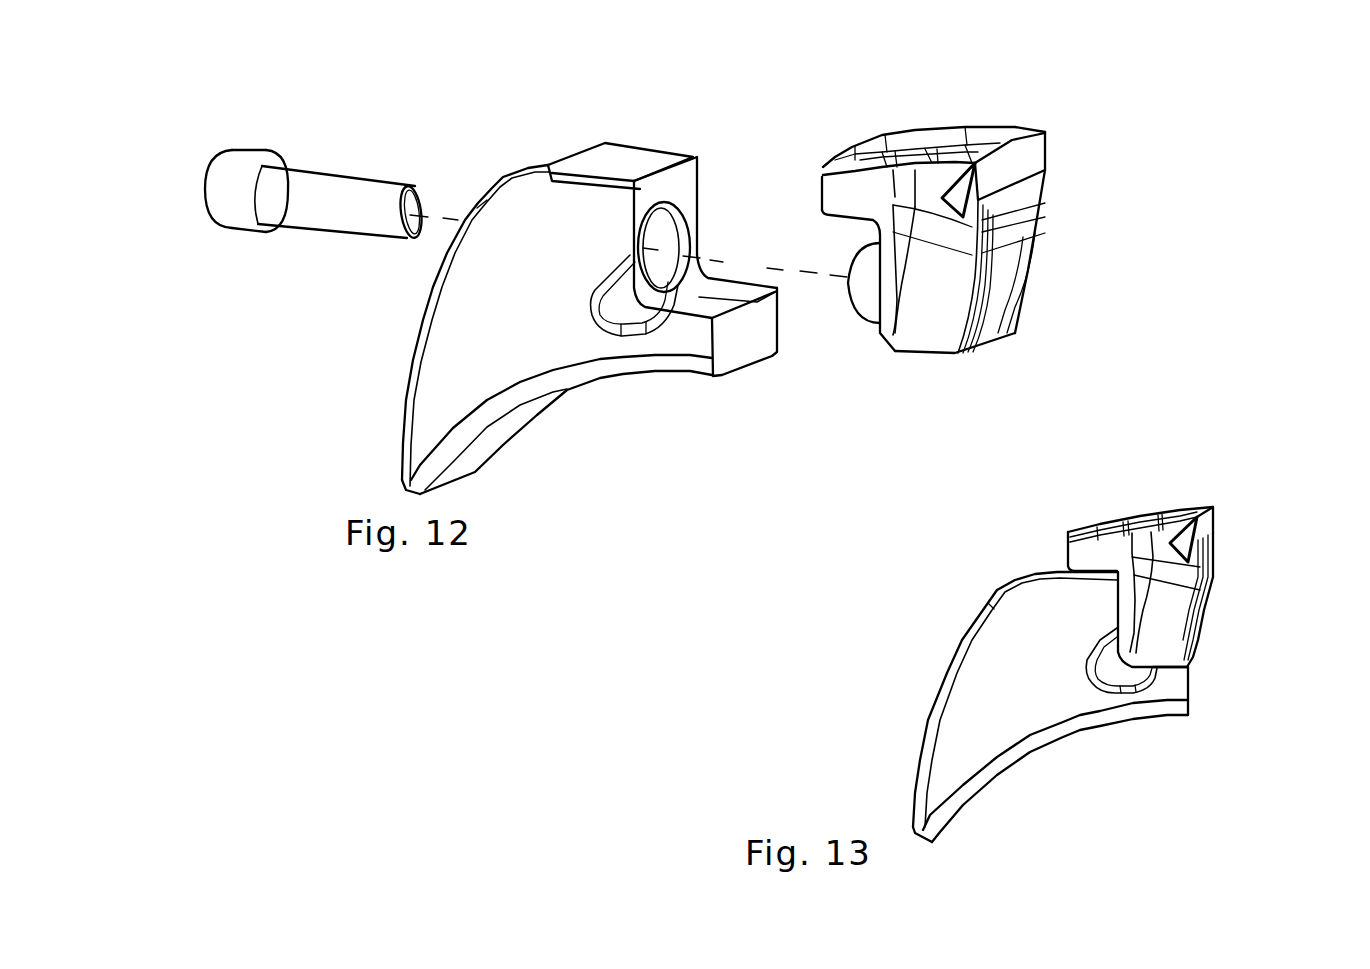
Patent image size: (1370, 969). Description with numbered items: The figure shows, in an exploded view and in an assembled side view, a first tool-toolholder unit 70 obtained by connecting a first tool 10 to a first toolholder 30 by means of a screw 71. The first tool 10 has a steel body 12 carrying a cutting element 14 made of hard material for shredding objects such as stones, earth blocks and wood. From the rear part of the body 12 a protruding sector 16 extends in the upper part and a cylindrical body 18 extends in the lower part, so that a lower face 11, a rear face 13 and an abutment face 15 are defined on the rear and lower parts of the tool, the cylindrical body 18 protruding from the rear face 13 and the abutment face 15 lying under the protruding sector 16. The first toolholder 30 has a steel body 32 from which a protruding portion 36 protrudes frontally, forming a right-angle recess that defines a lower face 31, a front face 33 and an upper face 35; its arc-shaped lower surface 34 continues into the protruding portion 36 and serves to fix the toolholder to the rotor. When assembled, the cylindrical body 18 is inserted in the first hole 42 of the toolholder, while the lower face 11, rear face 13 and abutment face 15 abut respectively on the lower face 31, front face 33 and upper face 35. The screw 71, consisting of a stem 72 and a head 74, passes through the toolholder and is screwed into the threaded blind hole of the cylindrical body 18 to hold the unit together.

In FIG. 12, the first tool 10 is at (953, 264).
In FIG. 13, the first tool 10 is at (1178, 526).
In FIG. 12, the lower face 11 is at (927, 350).
In FIG. 12, the body 12 is at (932, 283).
In FIG. 13, the body 12 is at (1163, 617).
In FIG. 12, the rear face 13 is at (870, 318).
In FIG. 13, the cutting element 14 is at (1220, 507).
In FIG. 12, the abutment face 15 is at (847, 217).
In FIG. 12, the protruding sector 16 is at (853, 193).
In FIG. 13, the protruding sector 16 is at (1100, 552).
In FIG. 12, the cylindrical body 18 is at (866, 285).
In FIG. 12, the first toolholder 30 is at (591, 290).
In FIG. 13, the first toolholder 30 is at (1011, 703).
In FIG. 12, the lower face 31 is at (730, 287).
In FIG. 12, the body 32 is at (467, 367).
In FIG. 13, the body 32 is at (987, 715).
In FIG. 12, the front face 33 is at (667, 285).
In FIG. 13, the lower surface 34 is at (1037, 751).
In FIG. 12, the upper face 35 is at (622, 158).
In FIG. 12, the protruding portion 36 is at (739, 304).
In FIG. 13, the protruding portion 36 is at (1167, 687).
In FIG. 12, the first hole 42 is at (661, 265).
In FIG. 13, the first tool-toolholder unit 70 is at (1063, 620).
In FIG. 12, the screw 71 is at (307, 151).
In FIG. 12, the stem 72 is at (340, 192).
In FIG. 12, the head 74 is at (238, 168).